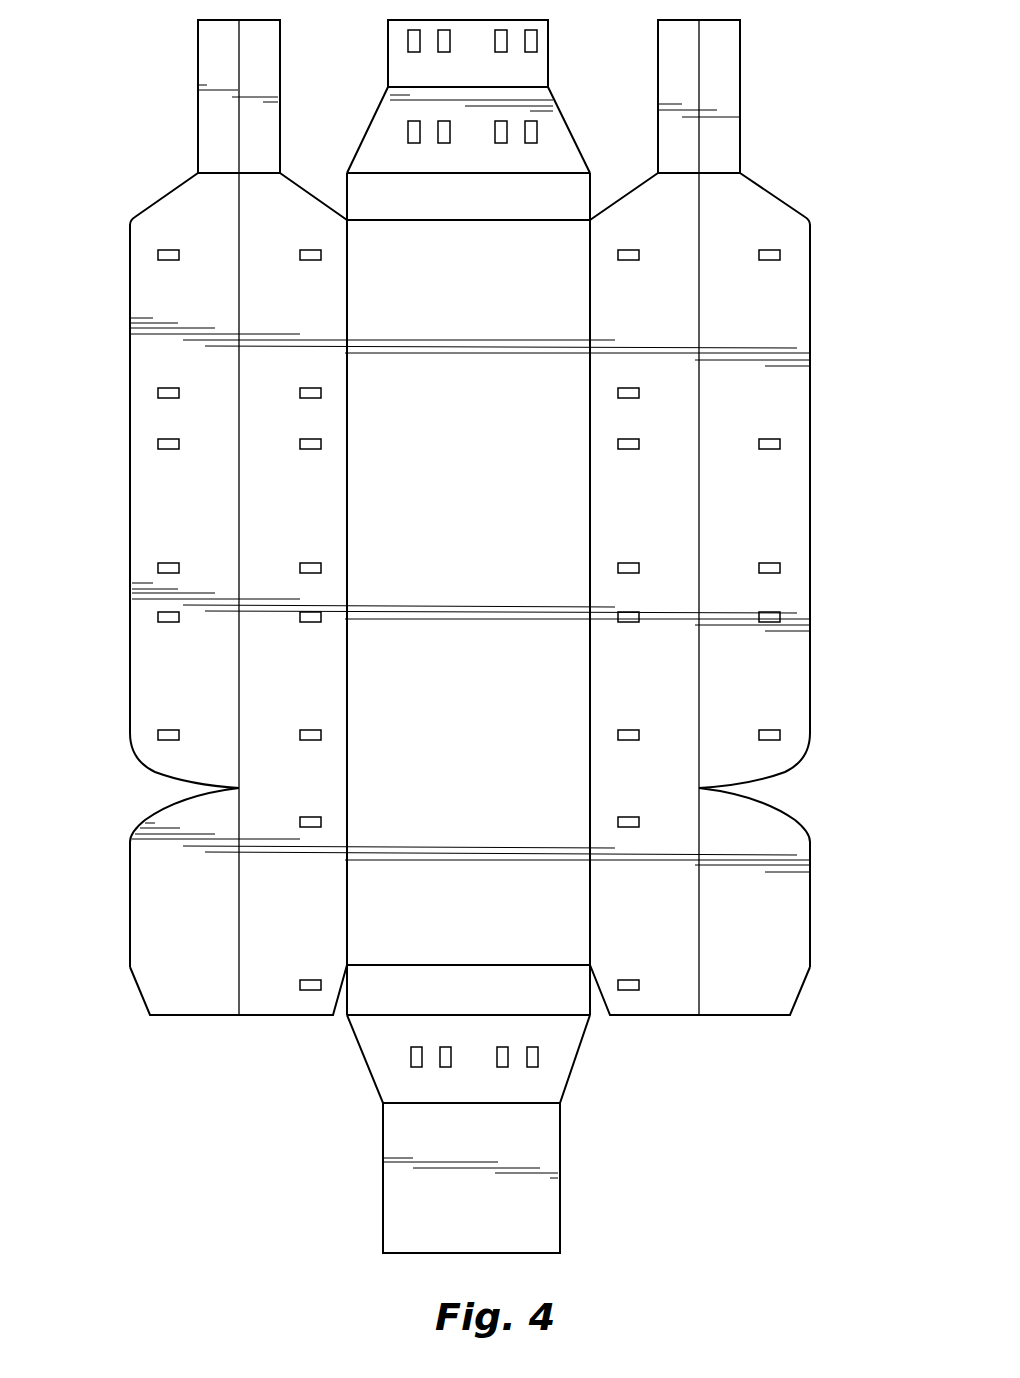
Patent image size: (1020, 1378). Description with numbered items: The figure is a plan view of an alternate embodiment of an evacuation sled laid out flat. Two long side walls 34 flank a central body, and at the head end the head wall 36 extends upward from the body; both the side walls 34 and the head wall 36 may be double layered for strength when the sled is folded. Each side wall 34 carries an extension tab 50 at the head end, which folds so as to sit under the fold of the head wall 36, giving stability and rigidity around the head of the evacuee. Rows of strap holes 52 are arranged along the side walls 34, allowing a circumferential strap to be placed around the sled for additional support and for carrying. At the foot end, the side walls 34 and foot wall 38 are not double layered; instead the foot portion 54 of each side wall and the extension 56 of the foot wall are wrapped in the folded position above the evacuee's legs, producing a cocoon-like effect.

The side walls 34 is at (130, 318).
The head wall 36 is at (538, 103).
The foot wall 38 is at (553, 1067).
The extension tab 50 is at (193, 20).
The strap holes 52 is at (785, 440).
The foot portion 54 is at (153, 918).
The extension of the foot wall 56 is at (540, 1198).